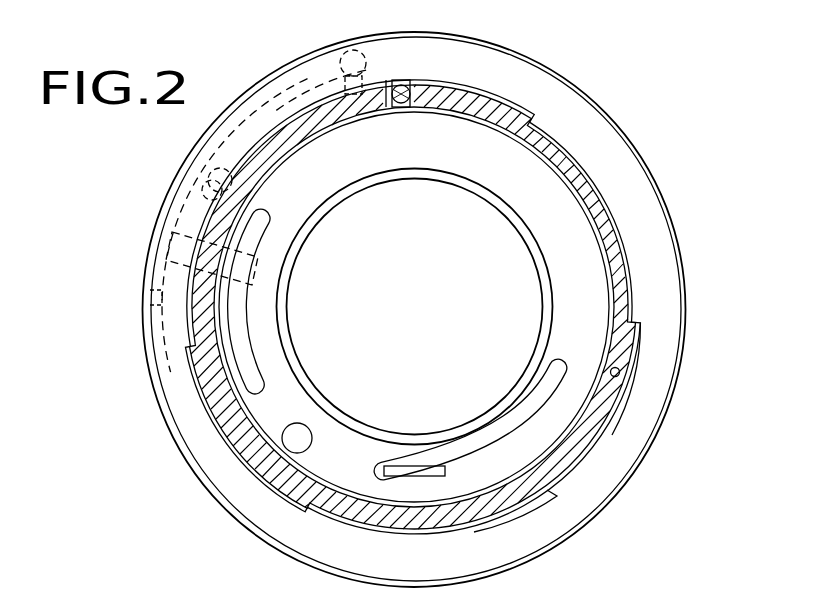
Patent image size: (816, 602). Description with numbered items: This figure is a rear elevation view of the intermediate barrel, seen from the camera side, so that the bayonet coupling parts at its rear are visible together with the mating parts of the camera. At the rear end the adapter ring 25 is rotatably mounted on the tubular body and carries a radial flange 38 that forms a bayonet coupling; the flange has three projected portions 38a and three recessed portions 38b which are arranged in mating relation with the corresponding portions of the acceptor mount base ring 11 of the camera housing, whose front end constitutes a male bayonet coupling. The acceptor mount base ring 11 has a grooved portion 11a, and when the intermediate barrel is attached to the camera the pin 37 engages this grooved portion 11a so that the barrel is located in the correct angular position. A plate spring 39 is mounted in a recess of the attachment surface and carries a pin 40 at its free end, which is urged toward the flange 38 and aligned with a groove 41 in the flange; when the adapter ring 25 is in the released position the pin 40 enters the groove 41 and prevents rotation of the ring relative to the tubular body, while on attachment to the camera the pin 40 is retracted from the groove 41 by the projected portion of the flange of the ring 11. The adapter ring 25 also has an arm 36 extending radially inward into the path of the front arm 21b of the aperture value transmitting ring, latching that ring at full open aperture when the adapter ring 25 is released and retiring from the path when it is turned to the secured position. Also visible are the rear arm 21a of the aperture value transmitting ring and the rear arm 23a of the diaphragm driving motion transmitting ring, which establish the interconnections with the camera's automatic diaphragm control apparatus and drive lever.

The adapter ring 25 is at (647, 165).
The radial flange 38 is at (548, 96).
The projected portions 38a is at (549, 496).
The recessed portions 38b is at (612, 428).
The acceptor mount base ring 11 is at (614, 250).
The grooved portion 11a is at (401, 88).
The pin 37 is at (401, 103).
The rear arm 21a is at (259, 220).
The front arm 21b is at (470, 419).
The rear arm 23a is at (416, 470).
The plate spring 39 is at (303, 95).
The pin 40 is at (362, 76).
The groove 41 is at (350, 60).
The arm 36 is at (178, 245).